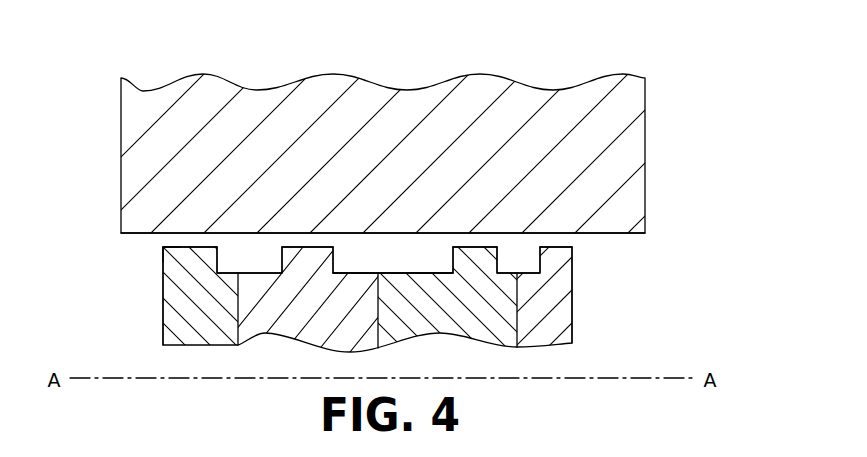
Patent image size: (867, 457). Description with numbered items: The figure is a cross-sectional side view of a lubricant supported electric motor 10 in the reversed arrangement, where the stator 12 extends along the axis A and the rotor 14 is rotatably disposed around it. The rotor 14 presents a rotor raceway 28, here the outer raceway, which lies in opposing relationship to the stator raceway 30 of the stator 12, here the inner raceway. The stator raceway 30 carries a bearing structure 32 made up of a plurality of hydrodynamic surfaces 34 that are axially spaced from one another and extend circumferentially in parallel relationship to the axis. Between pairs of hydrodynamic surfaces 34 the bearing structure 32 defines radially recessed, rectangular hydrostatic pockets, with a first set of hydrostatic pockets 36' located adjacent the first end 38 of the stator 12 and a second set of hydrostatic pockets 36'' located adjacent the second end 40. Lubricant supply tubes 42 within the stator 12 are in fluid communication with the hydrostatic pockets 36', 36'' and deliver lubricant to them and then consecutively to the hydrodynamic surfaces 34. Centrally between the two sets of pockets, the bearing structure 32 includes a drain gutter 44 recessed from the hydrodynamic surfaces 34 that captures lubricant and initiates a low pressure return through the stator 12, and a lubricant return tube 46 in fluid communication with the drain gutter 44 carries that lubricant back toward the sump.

The lubricant supported electric motor 10 is at (688, 58).
The stator 12 is at (572, 290).
The rotor 14 is at (645, 147).
The rotor raceway 28 is at (133, 234).
The stator raceway 30 is at (170, 243).
The bearing structure 32 is at (347, 257).
The hydrodynamic surfaces 34 is at (307, 247).
The first set of hydrostatic pockets 36' is at (251, 228).
The second set of hydrostatic pockets 36'' is at (525, 228).
The first end 38 is at (163, 327).
The second end 40 is at (572, 330).
The lubricant supply tubes 42 is at (232, 321).
The drain gutter 44 is at (400, 273).
The lubricant return tube 46 is at (372, 318).